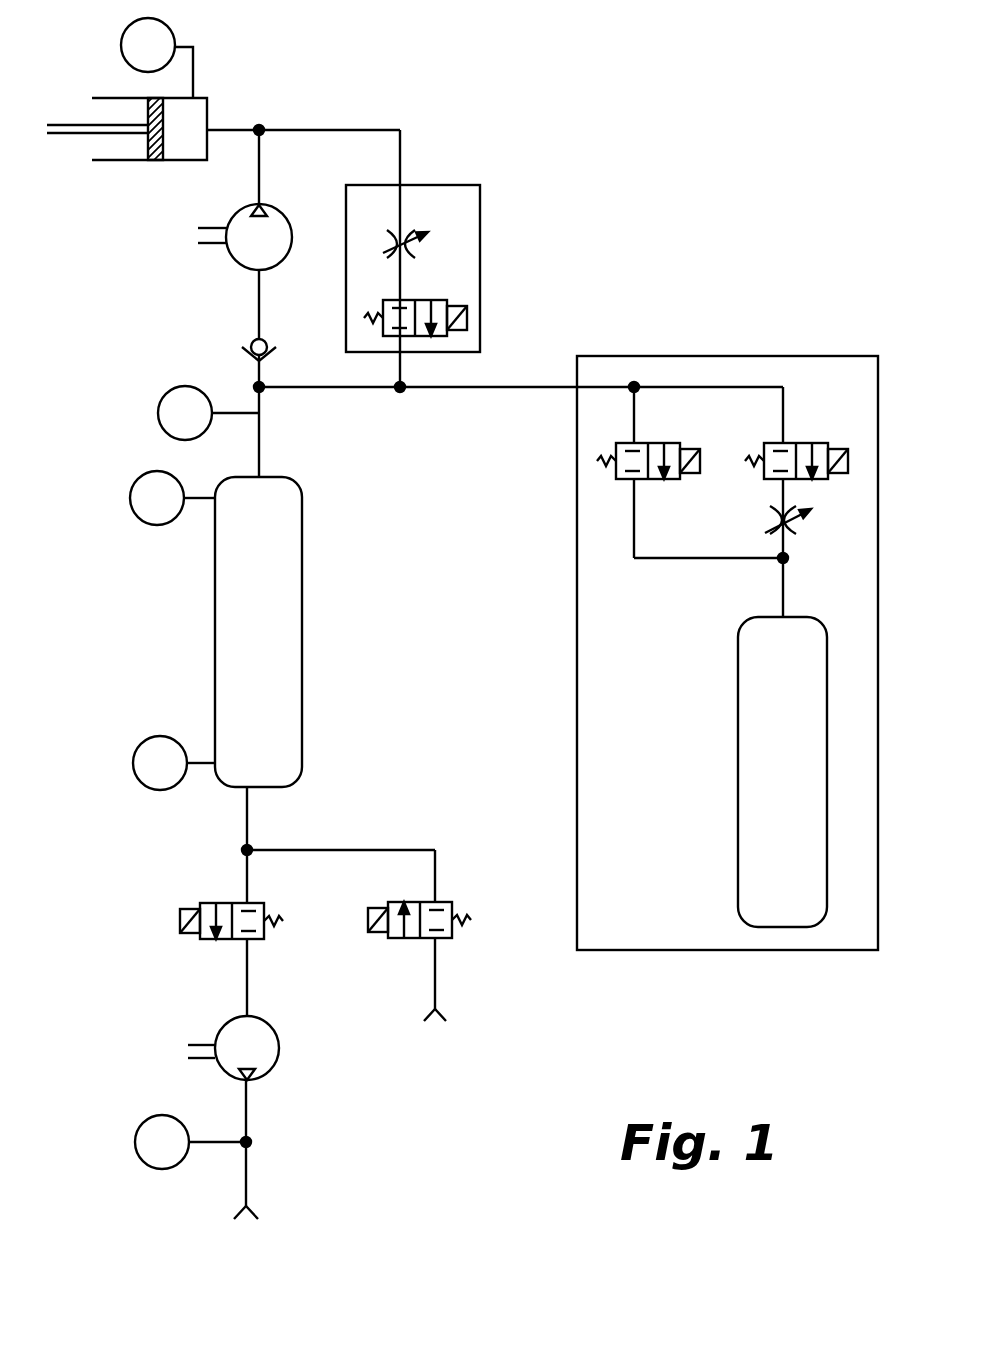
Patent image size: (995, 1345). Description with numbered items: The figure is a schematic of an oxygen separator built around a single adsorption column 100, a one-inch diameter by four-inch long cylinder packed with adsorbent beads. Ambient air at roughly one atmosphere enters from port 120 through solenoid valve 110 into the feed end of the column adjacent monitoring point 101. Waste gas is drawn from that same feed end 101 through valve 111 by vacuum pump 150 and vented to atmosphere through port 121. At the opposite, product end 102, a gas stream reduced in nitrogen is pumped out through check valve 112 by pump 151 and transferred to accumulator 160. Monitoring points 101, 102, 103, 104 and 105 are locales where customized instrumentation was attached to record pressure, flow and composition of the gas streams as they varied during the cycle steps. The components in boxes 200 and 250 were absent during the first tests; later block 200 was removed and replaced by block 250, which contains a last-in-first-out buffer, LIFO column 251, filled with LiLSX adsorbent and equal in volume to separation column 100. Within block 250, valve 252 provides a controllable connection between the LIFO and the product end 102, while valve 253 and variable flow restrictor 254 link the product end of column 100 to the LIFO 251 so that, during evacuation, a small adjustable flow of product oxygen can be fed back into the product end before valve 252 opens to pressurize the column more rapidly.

The adsorption column 100 is at (258, 632).
The feed end monitoring point 101 is at (174, 763).
The product end monitoring point 102 is at (172, 498).
The monitoring point 103 is at (208, 413).
The monitoring point 104 is at (157, 58).
The monitoring point 105 is at (190, 1142).
The solenoid valve 110 is at (412, 902).
The valve 111 is at (218, 903).
The check valve 112 is at (246, 343).
The port 120 is at (435, 1015).
The port 121 is at (244, 1222).
The vacuum pump 150 is at (231, 1020).
The pump 151 is at (262, 204).
The accumulator 160 is at (207, 98).
The block 200 is at (414, 185).
The block 250 is at (792, 356).
The LIFO column 251 is at (782, 772).
The valve 252 is at (668, 443).
The valve 253 is at (806, 443).
The variable flow restrictor 254 is at (772, 520).